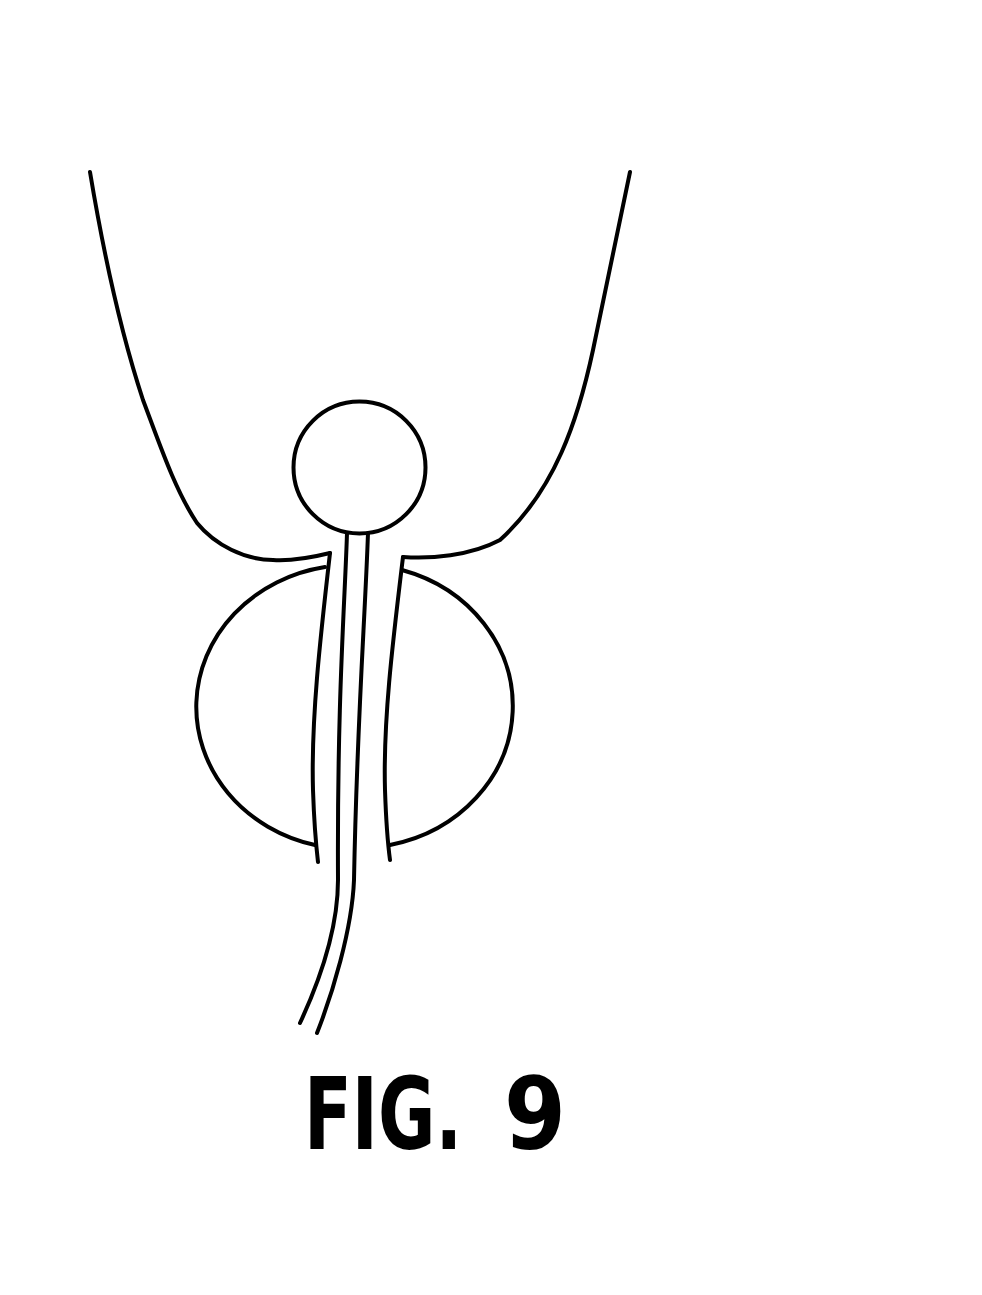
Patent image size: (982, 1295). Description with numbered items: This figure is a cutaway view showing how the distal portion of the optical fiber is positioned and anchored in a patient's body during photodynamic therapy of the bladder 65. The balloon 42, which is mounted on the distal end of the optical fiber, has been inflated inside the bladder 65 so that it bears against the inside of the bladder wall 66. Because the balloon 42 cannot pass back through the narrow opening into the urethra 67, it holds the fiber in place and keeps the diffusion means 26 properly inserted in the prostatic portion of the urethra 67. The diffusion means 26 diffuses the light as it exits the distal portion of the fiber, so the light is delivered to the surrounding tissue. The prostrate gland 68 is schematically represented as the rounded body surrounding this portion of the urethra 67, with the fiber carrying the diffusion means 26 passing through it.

The bladder 65 is at (472, 520).
The bladder wall 66 is at (608, 292).
The balloon 42 is at (425, 475).
The prostrate gland 68 is at (273, 760).
The urethra 67 is at (380, 747).
The diffusion means 26 is at (357, 827).